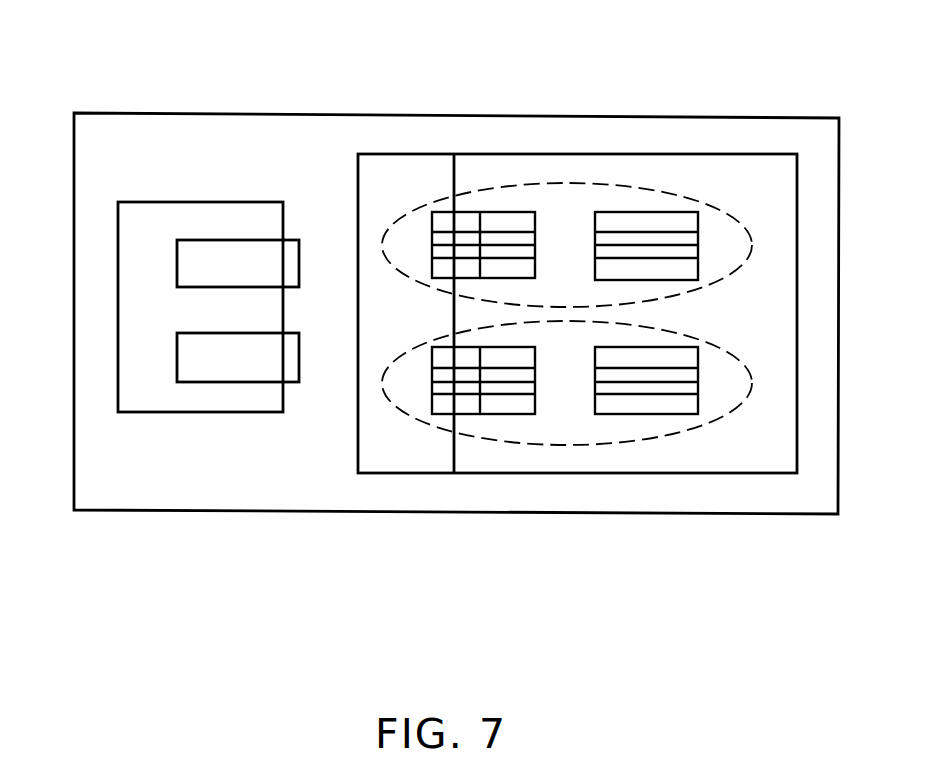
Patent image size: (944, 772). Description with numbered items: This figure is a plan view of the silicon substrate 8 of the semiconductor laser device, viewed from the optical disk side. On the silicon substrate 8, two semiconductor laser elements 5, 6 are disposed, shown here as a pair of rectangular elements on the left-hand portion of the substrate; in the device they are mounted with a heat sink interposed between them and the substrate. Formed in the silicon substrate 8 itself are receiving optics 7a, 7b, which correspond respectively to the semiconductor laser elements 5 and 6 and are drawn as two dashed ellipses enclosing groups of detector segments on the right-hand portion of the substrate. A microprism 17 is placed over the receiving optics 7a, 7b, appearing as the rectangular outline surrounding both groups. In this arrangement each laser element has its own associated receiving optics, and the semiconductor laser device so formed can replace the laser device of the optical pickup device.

The semiconductor laser element 5 is at (207, 375).
The semiconductor laser element 6 is at (210, 250).
The receiving optics 7a is at (546, 447).
The receiving optics 7b is at (570, 183).
The silicon substrate 8 is at (723, 126).
The microprism 17 is at (617, 162).